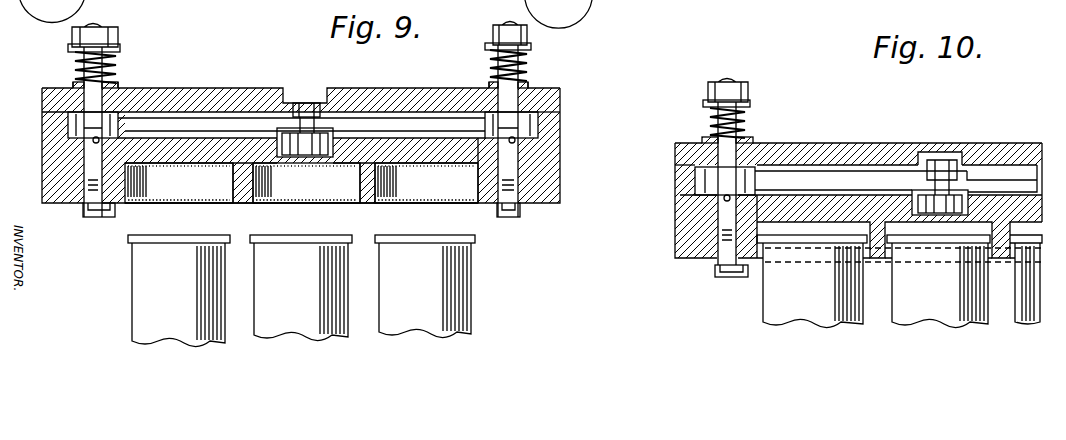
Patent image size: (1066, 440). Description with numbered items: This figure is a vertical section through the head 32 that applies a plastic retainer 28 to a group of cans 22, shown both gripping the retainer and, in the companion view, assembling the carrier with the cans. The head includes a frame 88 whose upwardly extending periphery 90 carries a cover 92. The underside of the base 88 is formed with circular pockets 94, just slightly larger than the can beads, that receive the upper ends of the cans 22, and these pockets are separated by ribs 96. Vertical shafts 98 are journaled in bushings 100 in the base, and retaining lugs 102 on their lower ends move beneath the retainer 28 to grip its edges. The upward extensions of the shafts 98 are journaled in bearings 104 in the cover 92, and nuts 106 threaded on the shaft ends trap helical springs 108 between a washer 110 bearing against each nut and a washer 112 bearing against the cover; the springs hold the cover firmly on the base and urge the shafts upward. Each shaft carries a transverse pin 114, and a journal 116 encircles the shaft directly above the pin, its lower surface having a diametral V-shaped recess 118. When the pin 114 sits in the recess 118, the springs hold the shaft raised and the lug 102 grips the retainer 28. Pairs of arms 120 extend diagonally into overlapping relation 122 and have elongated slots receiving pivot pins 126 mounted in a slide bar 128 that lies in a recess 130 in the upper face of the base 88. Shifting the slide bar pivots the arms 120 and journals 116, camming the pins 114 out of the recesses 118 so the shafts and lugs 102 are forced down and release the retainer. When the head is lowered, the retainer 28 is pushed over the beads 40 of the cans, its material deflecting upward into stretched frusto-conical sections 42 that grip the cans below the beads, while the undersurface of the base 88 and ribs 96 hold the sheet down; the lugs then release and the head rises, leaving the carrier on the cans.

In FIG. 9, the cans 22 is at (210, 292).
In FIG. 10, the cans 22 is at (824, 314).
In FIG. 9, the plastic retainer 28 is at (385, 203).
In FIG. 10, the plastic retainer 28 is at (877, 230).
In FIG. 9, the head 32 is at (580, 100).
In FIG. 10, the head 32 is at (795, 140).
In FIG. 9, the beads 40 is at (475, 243).
In FIG. 10, the beads 40 is at (948, 243).
In FIG. 10, the frusto-conical section 42 is at (890, 255).
In FIG. 9, the frame 88 is at (46, 148).
In FIG. 10, the frame 88 is at (676, 210).
In FIG. 9, the periphery 90 is at (62, 96).
In FIG. 9, the cover 92 is at (580, 100).
In FIG. 10, the cover 92 is at (830, 143).
In FIG. 9, the pockets 94 is at (176, 192).
In FIG. 10, the pockets 94 is at (985, 180).
In FIG. 9, the ribs 96 is at (320, 195).
In FIG. 10, the ribs 96 is at (1020, 190).
In FIG. 9, the vertical shafts 98 is at (90, 155).
In FIG. 10, the vertical shafts 98 is at (748, 95).
In FIG. 9, the bushings 100 is at (85, 175).
In FIG. 9, the retaining lugs 102 is at (106, 218).
In FIG. 10, the retaining lugs 102 is at (742, 277).
In FIG. 9, the bearings 104 is at (120, 88).
In FIG. 9, the nuts 106 is at (114, 29).
In FIG. 9, the helical springs 108 is at (112, 60).
In FIG. 10, the helical springs 108 is at (712, 118).
In FIG. 9, the washer 110 is at (68, 47).
In FIG. 9, the washer 112 is at (76, 82).
In FIG. 9, the transverse pins 114 is at (66, 128).
In FIG. 10, the transverse pins 114 is at (678, 228).
In FIG. 9, the journals 116 is at (150, 92).
In FIG. 10, the journals 116 is at (677, 176).
In FIG. 9, the V-shaped recess 118 is at (68, 116).
In FIG. 10, the V-shaped recess 118 is at (695, 190).
In FIG. 9, the arms 120 is at (188, 124).
In FIG. 10, the arms 120 is at (975, 140).
In FIG. 9, the overlapping relation 122 is at (314, 125).
In FIG. 9, the pivot pins 126 is at (300, 103).
In FIG. 9, the slide bar 128 is at (305, 157).
In FIG. 9, the recess 130 is at (233, 152).